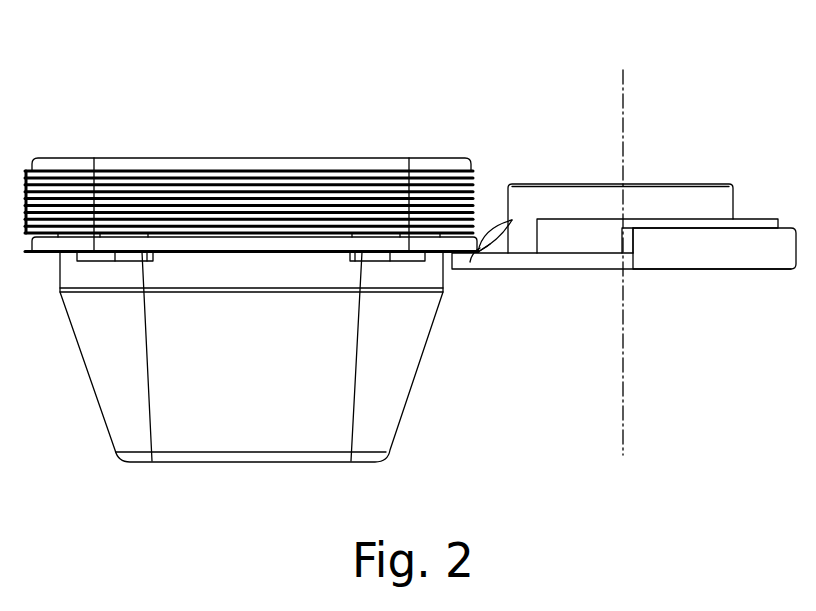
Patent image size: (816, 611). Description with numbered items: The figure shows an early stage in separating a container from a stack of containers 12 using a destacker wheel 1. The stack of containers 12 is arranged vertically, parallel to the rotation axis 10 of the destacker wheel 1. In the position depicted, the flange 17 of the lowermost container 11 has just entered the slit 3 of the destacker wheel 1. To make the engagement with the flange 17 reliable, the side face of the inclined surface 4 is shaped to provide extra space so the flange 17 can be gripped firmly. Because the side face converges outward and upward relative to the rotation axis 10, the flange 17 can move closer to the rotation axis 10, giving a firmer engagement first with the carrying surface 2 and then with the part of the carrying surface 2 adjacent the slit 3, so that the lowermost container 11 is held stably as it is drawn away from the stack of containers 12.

The destacker wheel 1 is at (714, 183).
The carrying surface 2 is at (495, 253).
The slit 3 is at (498, 238).
The inclined surface 4 is at (481, 243).
The rotation axis 10 is at (623, 78).
The lowermost container 11 is at (265, 428).
The stack of containers 12 is at (424, 234).
The flange 17 is at (470, 262).